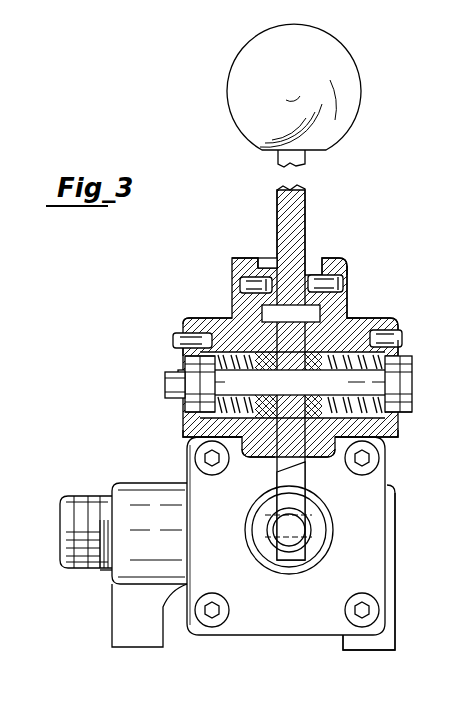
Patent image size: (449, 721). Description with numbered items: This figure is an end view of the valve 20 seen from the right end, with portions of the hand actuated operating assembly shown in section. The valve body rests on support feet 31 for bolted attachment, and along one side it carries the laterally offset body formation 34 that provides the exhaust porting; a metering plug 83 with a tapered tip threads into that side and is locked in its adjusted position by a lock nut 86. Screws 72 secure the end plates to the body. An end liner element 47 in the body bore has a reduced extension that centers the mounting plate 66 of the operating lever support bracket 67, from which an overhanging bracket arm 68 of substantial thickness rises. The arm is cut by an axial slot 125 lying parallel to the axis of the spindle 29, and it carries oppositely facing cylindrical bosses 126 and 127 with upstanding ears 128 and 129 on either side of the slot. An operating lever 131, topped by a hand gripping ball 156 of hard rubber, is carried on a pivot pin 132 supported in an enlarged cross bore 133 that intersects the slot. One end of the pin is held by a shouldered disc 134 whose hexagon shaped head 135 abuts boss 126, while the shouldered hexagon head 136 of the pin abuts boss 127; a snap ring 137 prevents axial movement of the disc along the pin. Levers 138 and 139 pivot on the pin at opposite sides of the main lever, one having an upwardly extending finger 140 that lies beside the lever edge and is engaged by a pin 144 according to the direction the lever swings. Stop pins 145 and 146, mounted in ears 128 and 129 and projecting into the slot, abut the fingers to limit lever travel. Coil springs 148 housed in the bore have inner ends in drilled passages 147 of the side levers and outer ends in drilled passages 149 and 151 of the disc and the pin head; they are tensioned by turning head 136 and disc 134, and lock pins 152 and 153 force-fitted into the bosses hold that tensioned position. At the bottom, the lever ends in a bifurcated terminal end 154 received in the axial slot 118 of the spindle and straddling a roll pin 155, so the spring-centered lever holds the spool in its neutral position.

The hand gripping ball 156 is at (262, 68).
The operating lever 131 is at (305, 196).
The finger 140 is at (268, 259).
The ear 128 is at (245, 262).
The stop pin 145 is at (240, 268).
The stop pin 146 is at (313, 275).
The bracket arm 68 is at (335, 255).
The ear 129 is at (345, 262).
The operating lever support bracket 67 is at (221, 318).
The cylindrical boss 126 is at (190, 318).
The lock pin 152 is at (185, 333).
The drilled passage 151 is at (182, 350).
The hexagon shaped head 135 is at (182, 368).
The snap ring 137 is at (165, 386).
The shouldered disc 134 is at (190, 395).
The cross bore 133 is at (186, 412).
The coil spring 148 is at (349, 320).
The drilled passage 147 is at (242, 384).
The pivot pin 132 is at (292, 382).
The slot 125 is at (355, 384).
The pin 144 is at (291, 313).
The cylindrical boss 127 is at (379, 318).
The lock pin 153 is at (392, 330).
The shouldered hexagon head 136 is at (404, 347).
The drilled passage 149 is at (404, 357).
The lever 138 is at (259, 452).
The lever 139 is at (312, 450).
The spindle 29 is at (304, 518).
The screws 72 is at (213, 475).
The roll pin 155 is at (272, 541).
The bifurcated terminal end 154 is at (294, 548).
The axial slot 118 is at (258, 556).
The end liner element 47 is at (290, 574).
The mounting plate 66 is at (297, 635).
The valve 20 is at (258, 641).
The support feet 31 is at (122, 648).
The body formation 34 is at (150, 483).
The metering plug 83 is at (90, 496).
The lock nut 86 is at (108, 576).